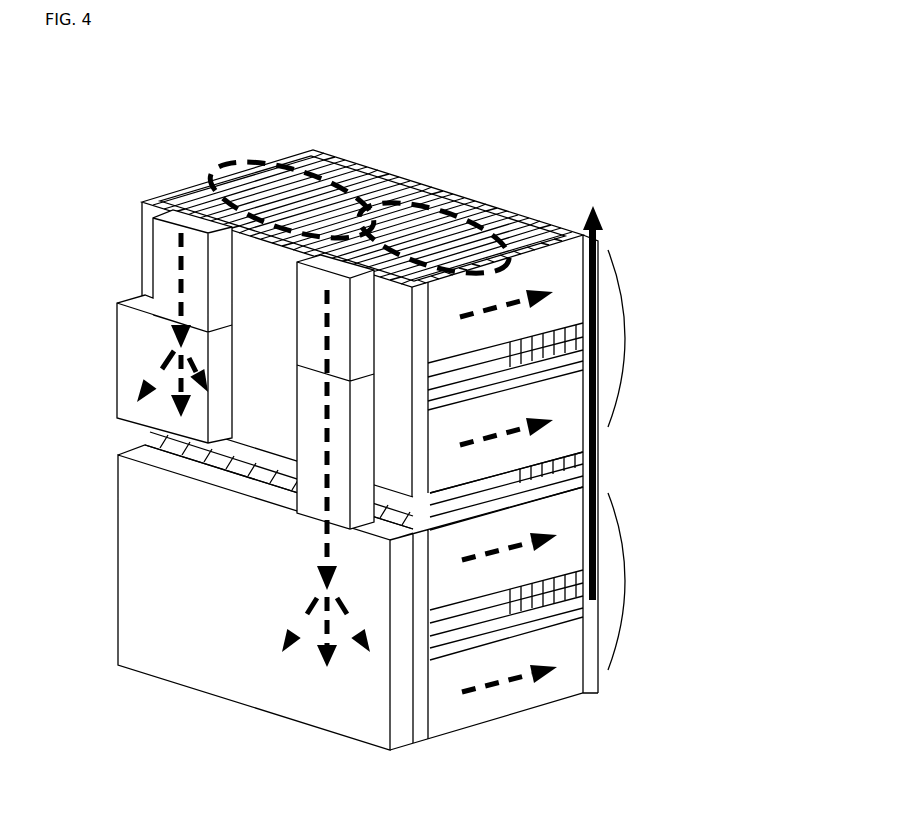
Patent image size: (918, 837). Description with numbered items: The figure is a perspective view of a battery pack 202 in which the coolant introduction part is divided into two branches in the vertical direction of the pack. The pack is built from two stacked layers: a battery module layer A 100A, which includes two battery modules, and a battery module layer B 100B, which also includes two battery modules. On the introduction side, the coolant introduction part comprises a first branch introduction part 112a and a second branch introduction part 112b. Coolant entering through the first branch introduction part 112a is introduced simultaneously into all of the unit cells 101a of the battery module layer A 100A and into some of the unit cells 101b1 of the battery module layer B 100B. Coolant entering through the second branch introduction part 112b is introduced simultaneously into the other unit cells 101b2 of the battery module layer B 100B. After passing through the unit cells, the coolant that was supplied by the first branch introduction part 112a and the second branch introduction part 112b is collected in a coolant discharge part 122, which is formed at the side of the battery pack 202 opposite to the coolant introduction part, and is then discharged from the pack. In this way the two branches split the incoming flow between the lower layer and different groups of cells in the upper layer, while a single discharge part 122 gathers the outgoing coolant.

The battery pack 202 is at (60, 104).
The battery module layer A 100A is at (636, 573).
The battery module layer B 100B is at (636, 329).
The unit cells (a) 101a is at (573, 688).
The unit cells of battery module layer B 101b1 is at (482, 224).
The other unit cells of battery module layer B 101b2 is at (238, 176).
The first branch introduction part 112a is at (312, 264).
The second branch introduction part 112b is at (162, 202).
The coolant discharge part 122 is at (432, 185).